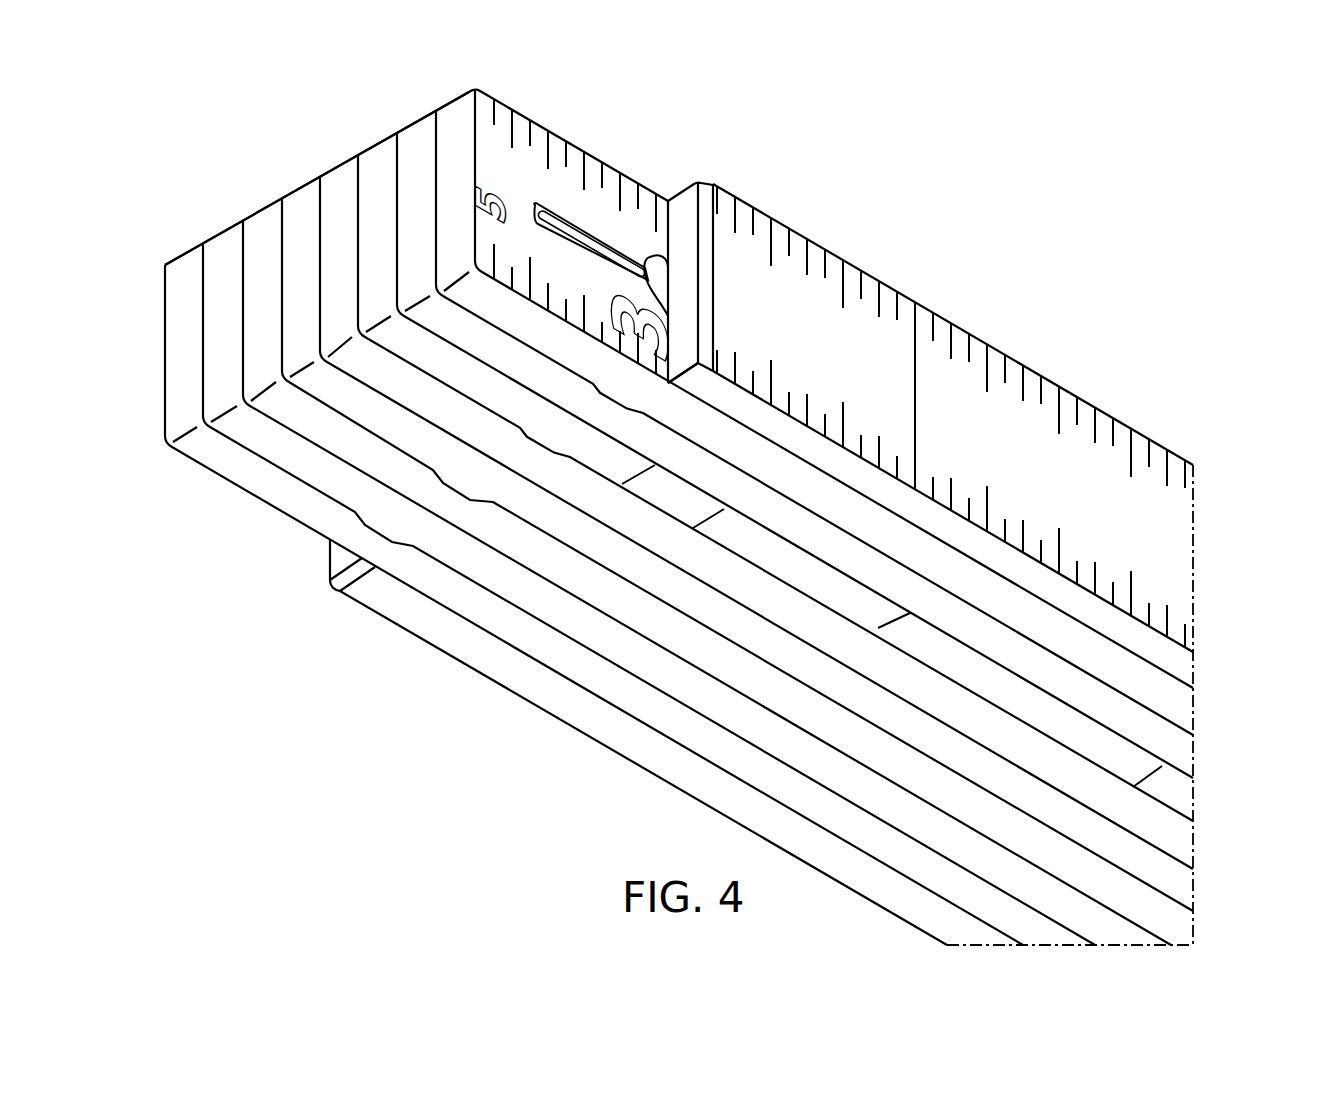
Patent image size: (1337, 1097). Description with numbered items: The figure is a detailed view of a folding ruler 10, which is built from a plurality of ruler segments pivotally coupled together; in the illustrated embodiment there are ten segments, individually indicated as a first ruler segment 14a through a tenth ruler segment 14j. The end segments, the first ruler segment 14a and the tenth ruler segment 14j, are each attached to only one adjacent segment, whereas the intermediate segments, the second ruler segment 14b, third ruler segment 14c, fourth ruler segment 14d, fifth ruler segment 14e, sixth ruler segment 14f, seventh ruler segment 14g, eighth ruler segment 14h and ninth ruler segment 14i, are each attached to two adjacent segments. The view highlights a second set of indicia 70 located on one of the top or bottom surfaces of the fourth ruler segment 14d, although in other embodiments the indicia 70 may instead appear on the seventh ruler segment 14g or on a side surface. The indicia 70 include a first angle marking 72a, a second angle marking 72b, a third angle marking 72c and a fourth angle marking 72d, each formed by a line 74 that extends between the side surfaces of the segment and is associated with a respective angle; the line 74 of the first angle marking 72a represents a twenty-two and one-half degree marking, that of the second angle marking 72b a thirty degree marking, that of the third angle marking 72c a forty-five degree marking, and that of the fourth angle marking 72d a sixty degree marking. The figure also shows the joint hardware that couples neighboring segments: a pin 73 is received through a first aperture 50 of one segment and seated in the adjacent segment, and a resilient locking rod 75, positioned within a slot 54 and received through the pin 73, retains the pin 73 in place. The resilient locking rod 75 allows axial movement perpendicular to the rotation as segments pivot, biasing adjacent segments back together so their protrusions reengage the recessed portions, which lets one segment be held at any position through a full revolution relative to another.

The folding ruler 10 is at (1050, 227).
The first ruler segment 14a is at (745, 204).
The second ruler segment 14b is at (458, 97).
The third ruler segment 14c is at (410, 124).
The fourth ruler segment 14d is at (372, 147).
The fifth ruler segment 14e is at (327, 172).
The sixth ruler segment 14f is at (297, 189).
The seventh ruler segment 14g is at (253, 214).
The eighth ruler segment 14h is at (222, 230).
The ninth ruler segment 14i is at (168, 260).
The tenth ruler segment 14j is at (327, 562).
The first aperture 50 is at (652, 258).
The slot 54 is at (573, 217).
The second set of indicia 70 is at (1020, 832).
The first angle marking 72a is at (580, 483).
The second angle marking 72b is at (705, 478).
The third angle marking 72c is at (846, 638).
The fourth angle marking 72d is at (1156, 744).
The pin 73 is at (663, 288).
The line 74 is at (697, 527).
The resilient locking rod 75 is at (583, 240).